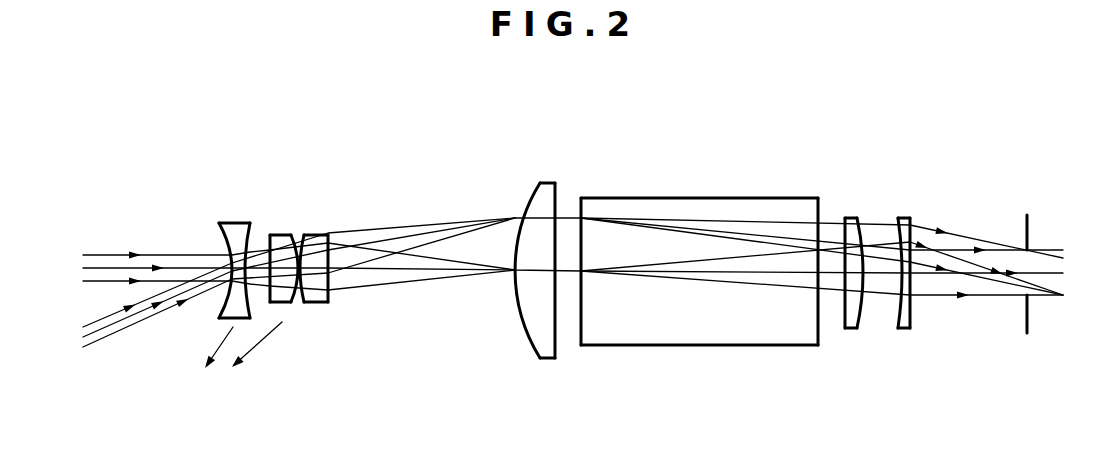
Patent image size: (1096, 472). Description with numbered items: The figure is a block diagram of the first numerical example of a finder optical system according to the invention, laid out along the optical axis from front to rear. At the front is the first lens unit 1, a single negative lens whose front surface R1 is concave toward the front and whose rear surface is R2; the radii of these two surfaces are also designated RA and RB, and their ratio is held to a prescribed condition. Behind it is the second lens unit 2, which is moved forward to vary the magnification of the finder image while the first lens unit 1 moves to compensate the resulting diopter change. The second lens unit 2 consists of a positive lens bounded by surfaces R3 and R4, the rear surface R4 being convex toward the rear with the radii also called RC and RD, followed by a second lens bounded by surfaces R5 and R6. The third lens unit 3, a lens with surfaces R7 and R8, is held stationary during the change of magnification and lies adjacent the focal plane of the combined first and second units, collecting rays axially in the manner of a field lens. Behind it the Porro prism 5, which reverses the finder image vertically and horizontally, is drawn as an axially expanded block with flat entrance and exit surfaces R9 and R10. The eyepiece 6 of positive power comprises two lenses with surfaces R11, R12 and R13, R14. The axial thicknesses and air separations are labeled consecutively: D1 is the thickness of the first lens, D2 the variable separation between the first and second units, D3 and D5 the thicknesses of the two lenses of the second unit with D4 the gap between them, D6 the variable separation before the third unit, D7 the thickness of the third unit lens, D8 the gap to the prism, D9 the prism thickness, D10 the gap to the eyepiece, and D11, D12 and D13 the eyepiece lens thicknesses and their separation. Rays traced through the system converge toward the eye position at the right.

The first lens unit 1 is at (227, 240).
The second lens unit 2 is at (310, 240).
The third lens unit 3 is at (536, 240).
The Porro prism 5 is at (699, 240).
The eyepiece 6 is at (907, 240).
The first lens surface R1 is at (220, 224).
The second lens surface R2 is at (250, 224).
The third lens surface R3 is at (270, 235).
The fourth lens surface R4 is at (296, 235).
The fifth lens surface R5 is at (305, 235).
The sixth lens surface R6 is at (328, 235).
The seventh lens surface R7 is at (522, 232).
The eighth lens surface R8 is at (556, 198).
The ninth surface R9 is at (583, 200).
The tenth surface R10 is at (816, 200).
The eleventh lens surface R11 is at (846, 220).
The twelfth lens surface R12 is at (862, 220).
The thirteenth lens surface R13 is at (897, 220).
The fourteenth lens surface R14 is at (911, 222).
The radius of curvature of front surface of lens L1-1 RA is at (206, 224).
The radius of curvature of rear surface of lens L1-1 RB is at (232, 224).
The radius of curvature of front surface of lens L2-1 RC is at (262, 216).
The radius of curvature of rear surface of lens L2-1 RD is at (294, 216).
The axial thickness D1 is at (238, 290).
The variable air separation D2 is at (259, 282).
The axial thickness D3 is at (284, 296).
The air separation D4 is at (298, 297).
The axial thickness D5 is at (313, 297).
The variable air separation D6 is at (403, 275).
The axial thickness D7 is at (541, 275).
The air separation D8 is at (565, 280).
The axial thickness D9 is at (705, 273).
The air separation D10 is at (832, 275).
The axial thickness D11 is at (851, 275).
The air separation D12 is at (880, 275).
The axial thickness D13 is at (910, 273).